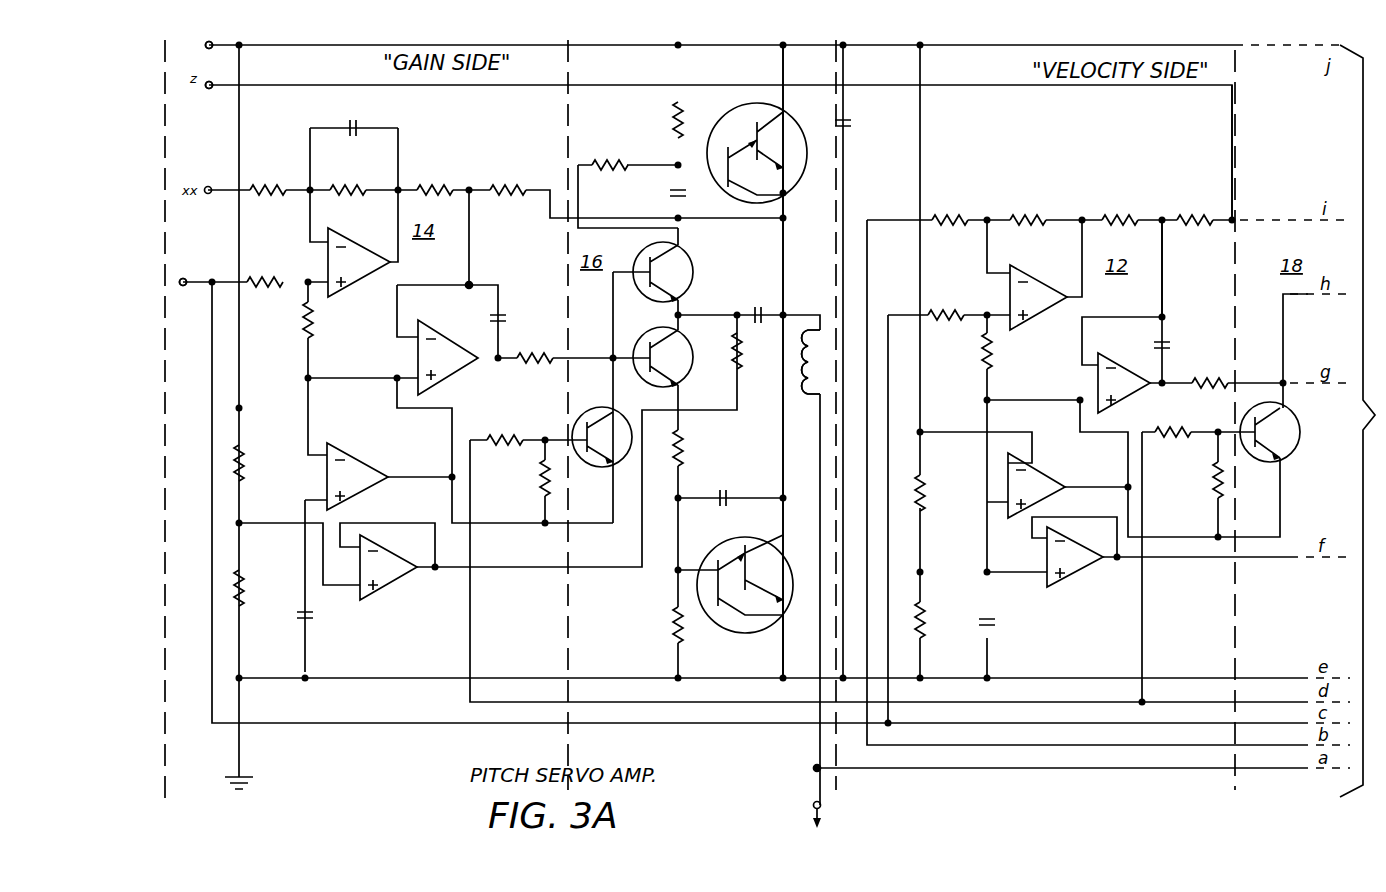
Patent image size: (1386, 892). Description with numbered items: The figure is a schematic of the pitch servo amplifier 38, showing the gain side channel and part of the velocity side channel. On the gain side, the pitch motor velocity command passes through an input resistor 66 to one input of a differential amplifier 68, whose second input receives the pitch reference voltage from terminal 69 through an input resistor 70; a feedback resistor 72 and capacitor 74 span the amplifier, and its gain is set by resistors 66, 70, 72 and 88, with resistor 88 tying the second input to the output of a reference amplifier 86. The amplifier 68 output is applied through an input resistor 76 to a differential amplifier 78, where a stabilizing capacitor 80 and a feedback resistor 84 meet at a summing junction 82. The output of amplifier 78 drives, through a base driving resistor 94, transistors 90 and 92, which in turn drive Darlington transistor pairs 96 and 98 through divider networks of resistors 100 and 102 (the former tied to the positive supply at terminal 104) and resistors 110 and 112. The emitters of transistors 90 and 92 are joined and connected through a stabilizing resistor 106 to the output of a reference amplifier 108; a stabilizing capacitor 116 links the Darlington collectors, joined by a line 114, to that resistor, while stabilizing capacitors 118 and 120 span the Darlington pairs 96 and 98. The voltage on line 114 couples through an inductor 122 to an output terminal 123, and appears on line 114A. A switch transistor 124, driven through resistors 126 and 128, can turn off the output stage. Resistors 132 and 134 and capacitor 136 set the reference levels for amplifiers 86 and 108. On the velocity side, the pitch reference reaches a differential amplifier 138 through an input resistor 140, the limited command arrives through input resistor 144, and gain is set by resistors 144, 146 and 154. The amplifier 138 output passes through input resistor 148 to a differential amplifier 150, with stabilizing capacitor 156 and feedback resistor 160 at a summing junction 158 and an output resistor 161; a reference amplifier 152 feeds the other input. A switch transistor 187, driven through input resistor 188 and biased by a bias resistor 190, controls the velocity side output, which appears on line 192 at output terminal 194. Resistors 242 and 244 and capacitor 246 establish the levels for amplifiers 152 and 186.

The pitch servo amplifier 38 is at (380, 740).
The terminal 104 is at (212, 49).
The output terminal 194 is at (209, 89).
The terminal 69 is at (186, 279).
The input resistor 66 is at (284, 184).
The resistor 72 is at (362, 186).
The capacitor 74 is at (350, 115).
The input resistor 76 is at (448, 183).
The feedback resistor 84 is at (522, 183).
The differential amplifier 68 is at (362, 252).
The input resistor 70 is at (280, 276).
The resistor 88 is at (313, 318).
The summing junction 82 is at (472, 282).
The stabilizing capacitor 80 is at (488, 318).
The differential amplifier 78 is at (440, 385).
The base driving resistor 94 is at (548, 352).
The differential amplifier 86 is at (375, 468).
The resistor 132 is at (268, 456).
The resistor 134 is at (244, 588).
The capacitor 136 is at (292, 616).
The reference amplifier 108 is at (390, 584).
The resistor 100 is at (672, 120).
The resistor 102 is at (624, 160).
The stabilizing capacitor 118 is at (668, 193).
The transistor 90 is at (686, 275).
The transistor 92 is at (655, 336).
The Darlington transistor pair 96 is at (790, 160).
The line 114 is at (786, 245).
The stabilizing capacitor 116 is at (758, 304).
The inductor 122 is at (822, 336).
The stabilizing resistor 106 is at (732, 362).
The resistor 112 is at (684, 456).
The stabilizing capacitor 120 is at (748, 470).
The switch transistor 124 is at (598, 408).
The resistor 126 is at (528, 418).
The resistor 128 is at (540, 480).
The resistor 110 is at (672, 626).
The Darlington transistor pair 98 is at (752, 628).
The line 114A is at (814, 758).
The output terminal 123 is at (821, 803).
The input resistor 144 is at (958, 214).
The resistor 146 is at (1032, 214).
The input resistor 148 is at (1120, 214).
The feedback resistor 160 is at (1196, 214).
The line 192 is at (1190, 88).
The differential amplifier 138 is at (1038, 286).
The input resistor 140 is at (956, 310).
The resistor 154 is at (980, 358).
The summing junction 158 is at (1168, 312).
The stabilizing capacitor 156 is at (1172, 346).
The resistor 161 is at (1220, 376).
The differential amplifier 150 is at (1122, 386).
The input resistor 188 is at (1170, 425).
The switch transistor 187 is at (1282, 440).
The bias resistor 190 is at (1212, 482).
The differential amplifier 152 is at (1040, 485).
The resistor 242 is at (928, 506).
The resistor 244 is at (926, 618).
The capacitor 246 is at (972, 622).
The differential amplifier 186 is at (1072, 562).